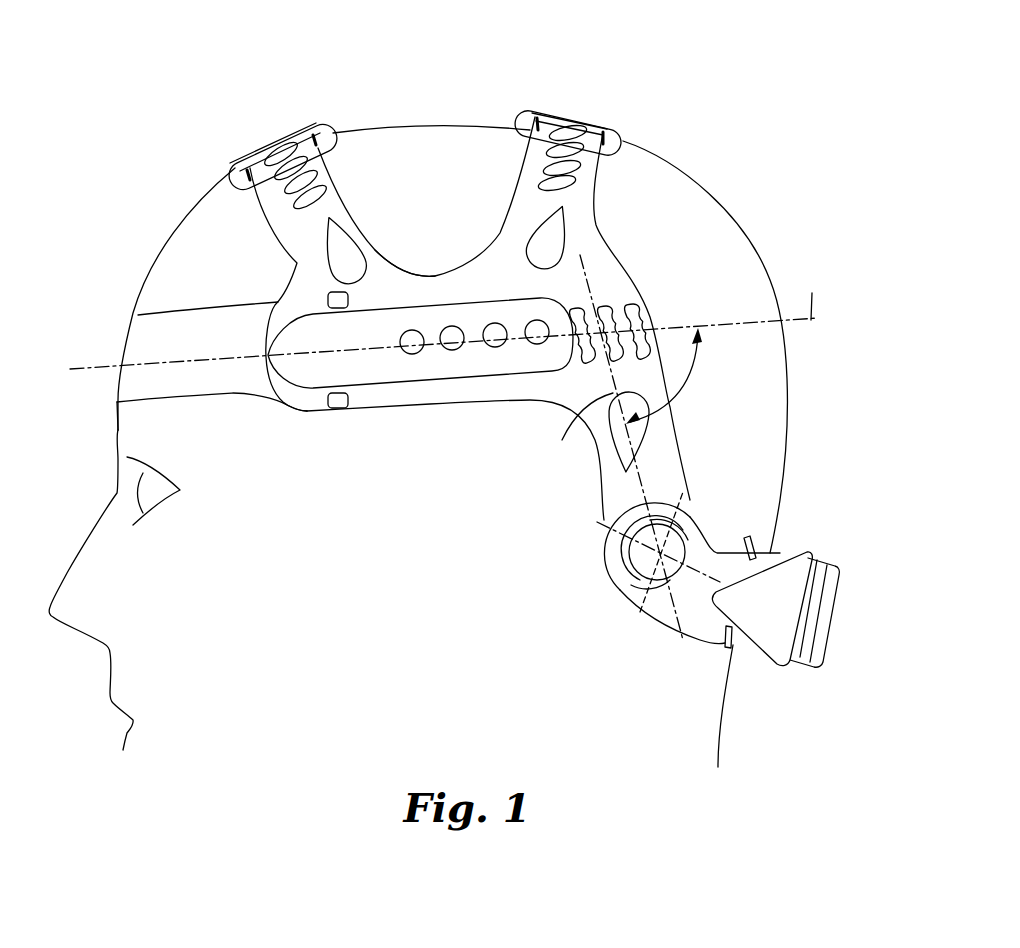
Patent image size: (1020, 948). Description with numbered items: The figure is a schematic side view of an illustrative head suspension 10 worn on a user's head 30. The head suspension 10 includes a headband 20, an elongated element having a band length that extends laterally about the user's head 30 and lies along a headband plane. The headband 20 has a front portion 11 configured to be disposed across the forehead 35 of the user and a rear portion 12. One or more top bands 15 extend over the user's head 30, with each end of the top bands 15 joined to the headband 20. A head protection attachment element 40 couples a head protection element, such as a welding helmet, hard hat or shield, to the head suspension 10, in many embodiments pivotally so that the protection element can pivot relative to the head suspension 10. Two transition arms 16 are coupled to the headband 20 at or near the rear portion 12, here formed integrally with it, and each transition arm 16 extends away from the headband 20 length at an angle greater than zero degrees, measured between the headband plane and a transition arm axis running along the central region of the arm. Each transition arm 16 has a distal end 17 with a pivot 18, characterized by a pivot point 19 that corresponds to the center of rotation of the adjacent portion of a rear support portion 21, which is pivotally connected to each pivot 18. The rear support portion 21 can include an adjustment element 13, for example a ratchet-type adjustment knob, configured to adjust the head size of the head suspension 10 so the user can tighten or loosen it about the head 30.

The head suspension 10 is at (442, 375).
The front portion 11 is at (126, 294).
The rear portion 12 is at (634, 253).
The adjustment element 13 is at (808, 661).
The top bands 15 is at (320, 128).
The transition arm 16 is at (665, 443).
The distal end 17 is at (598, 582).
The pivot 18 is at (652, 582).
The pivot point 19 is at (680, 540).
The headband 20 is at (431, 284).
The rear support portion 21 is at (708, 627).
The user's head 30 is at (697, 188).
The forehead 35 is at (187, 240).
The head protection attachment element 40 is at (432, 370).